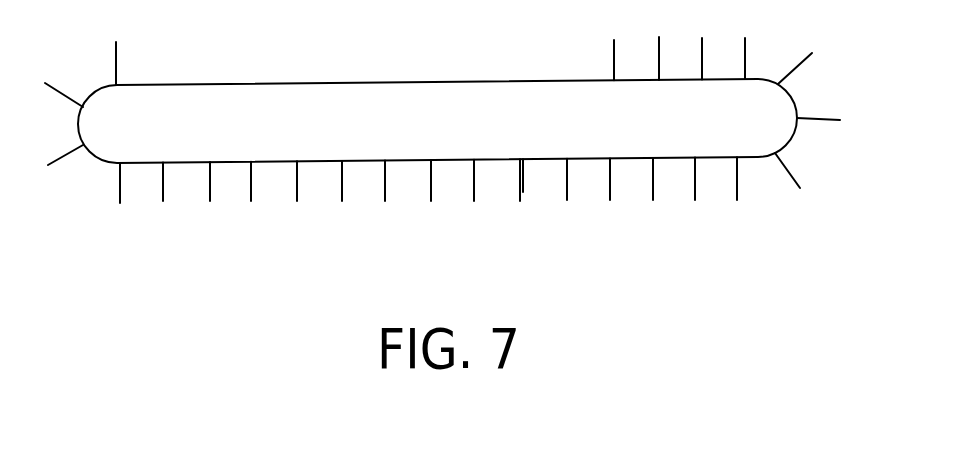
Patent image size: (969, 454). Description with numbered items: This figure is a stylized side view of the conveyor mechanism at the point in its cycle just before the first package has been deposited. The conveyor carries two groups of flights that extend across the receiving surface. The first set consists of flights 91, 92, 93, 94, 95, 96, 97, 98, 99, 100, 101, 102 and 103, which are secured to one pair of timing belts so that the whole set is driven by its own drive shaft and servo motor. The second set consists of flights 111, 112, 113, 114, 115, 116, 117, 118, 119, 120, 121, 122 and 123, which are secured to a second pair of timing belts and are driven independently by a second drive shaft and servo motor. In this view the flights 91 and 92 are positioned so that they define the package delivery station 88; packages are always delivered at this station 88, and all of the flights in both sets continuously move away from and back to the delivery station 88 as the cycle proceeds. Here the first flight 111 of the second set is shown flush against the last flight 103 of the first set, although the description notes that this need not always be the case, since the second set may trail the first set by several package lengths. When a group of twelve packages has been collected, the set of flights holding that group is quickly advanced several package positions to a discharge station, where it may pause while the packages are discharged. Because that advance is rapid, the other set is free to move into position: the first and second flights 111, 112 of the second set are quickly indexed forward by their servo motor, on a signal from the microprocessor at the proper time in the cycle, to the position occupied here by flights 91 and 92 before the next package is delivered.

The package delivery station 88 is at (98, 77).
The flight 91 is at (116, 60).
The flight 92 is at (62, 92).
The flight 93 is at (67, 157).
The flight 94 is at (120, 190).
The flight 95 is at (163, 190).
The flight 96 is at (210, 183).
The flight 97 is at (251, 185).
The flight 98 is at (297, 183).
The flight 99 is at (342, 183).
The flight 100 is at (385, 183).
The flight 101 is at (431, 183).
The flight 102 is at (474, 183).
The flight 103 is at (520, 178).
The flight 111 is at (523, 175).
The flight 112 is at (567, 180).
The flight 113 is at (610, 180).
The flight 114 is at (653, 180).
The flight 115 is at (695, 182).
The flight 116 is at (737, 180).
The flight 117 is at (790, 168).
The flight 118 is at (802, 118).
The flight 119 is at (790, 71).
The flight 120 is at (745, 52).
The flight 121 is at (702, 53).
The flight 122 is at (658, 52).
The flight 123 is at (613, 62).